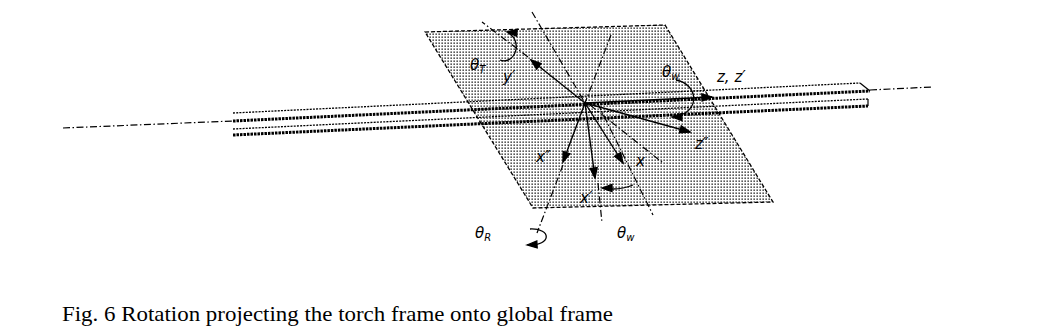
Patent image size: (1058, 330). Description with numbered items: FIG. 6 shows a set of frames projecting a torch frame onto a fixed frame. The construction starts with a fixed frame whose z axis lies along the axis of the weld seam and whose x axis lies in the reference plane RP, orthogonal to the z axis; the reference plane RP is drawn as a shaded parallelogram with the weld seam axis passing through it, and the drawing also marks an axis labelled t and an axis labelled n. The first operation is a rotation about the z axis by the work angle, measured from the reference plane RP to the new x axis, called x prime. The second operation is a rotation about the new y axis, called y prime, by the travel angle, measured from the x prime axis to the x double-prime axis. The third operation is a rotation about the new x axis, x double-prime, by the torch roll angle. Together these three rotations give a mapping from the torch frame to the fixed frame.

The reference plane RP is at (599, 107).
The torch axis t is at (497, 98).
The normal axis of reference plane n is at (639, 172).